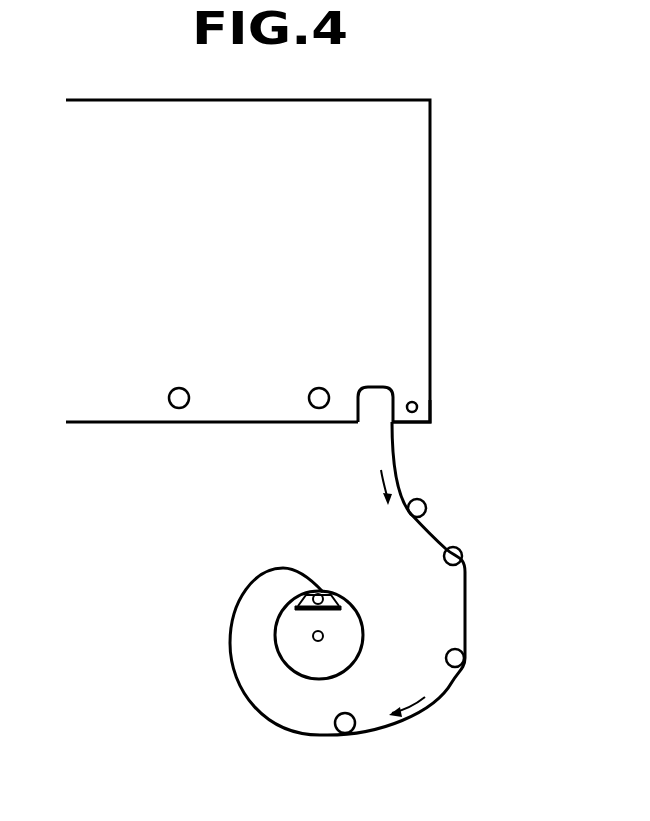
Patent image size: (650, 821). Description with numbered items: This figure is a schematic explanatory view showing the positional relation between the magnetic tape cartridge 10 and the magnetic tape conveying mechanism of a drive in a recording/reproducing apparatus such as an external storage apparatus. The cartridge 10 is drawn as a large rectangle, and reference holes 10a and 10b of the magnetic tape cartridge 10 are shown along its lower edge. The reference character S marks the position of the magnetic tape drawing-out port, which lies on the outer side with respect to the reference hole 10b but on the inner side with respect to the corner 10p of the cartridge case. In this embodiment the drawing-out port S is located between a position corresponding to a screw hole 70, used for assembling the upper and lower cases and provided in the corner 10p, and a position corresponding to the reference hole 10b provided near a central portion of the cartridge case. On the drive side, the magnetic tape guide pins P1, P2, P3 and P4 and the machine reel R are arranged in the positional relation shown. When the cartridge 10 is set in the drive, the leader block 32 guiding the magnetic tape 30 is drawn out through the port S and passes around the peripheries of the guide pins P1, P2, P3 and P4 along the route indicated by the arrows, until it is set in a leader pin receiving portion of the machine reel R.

The magnetic tape cartridge 10 is at (418, 208).
The reference hole 10a is at (180, 388).
The reference hole 10b is at (320, 388).
The screw hole 70 is at (416, 404).
The corner 10p is at (430, 422).
The position of magnetic tape drawing-out port S is at (378, 425).
The magnetic tape 30 is at (465, 618).
The magnetic tape guide pin P1 is at (426, 503).
The magnetic tape guide pin P2 is at (462, 556).
The magnetic tape guide pin P3 is at (462, 665).
The magnetic tape guide pin P4 is at (345, 735).
The machine reel R is at (352, 632).
The leader block 32 is at (340, 600).